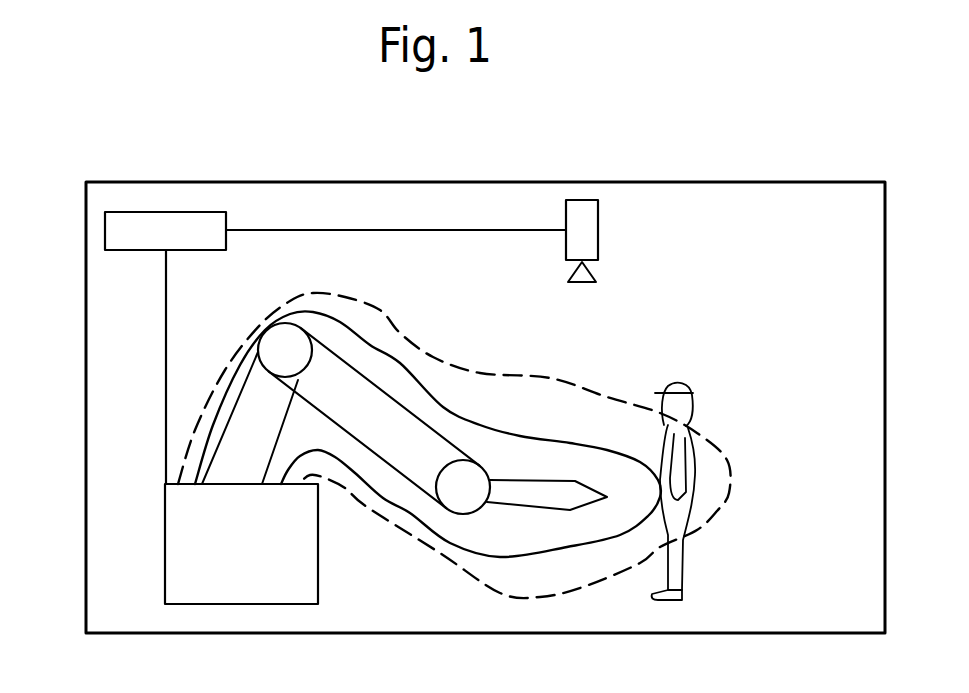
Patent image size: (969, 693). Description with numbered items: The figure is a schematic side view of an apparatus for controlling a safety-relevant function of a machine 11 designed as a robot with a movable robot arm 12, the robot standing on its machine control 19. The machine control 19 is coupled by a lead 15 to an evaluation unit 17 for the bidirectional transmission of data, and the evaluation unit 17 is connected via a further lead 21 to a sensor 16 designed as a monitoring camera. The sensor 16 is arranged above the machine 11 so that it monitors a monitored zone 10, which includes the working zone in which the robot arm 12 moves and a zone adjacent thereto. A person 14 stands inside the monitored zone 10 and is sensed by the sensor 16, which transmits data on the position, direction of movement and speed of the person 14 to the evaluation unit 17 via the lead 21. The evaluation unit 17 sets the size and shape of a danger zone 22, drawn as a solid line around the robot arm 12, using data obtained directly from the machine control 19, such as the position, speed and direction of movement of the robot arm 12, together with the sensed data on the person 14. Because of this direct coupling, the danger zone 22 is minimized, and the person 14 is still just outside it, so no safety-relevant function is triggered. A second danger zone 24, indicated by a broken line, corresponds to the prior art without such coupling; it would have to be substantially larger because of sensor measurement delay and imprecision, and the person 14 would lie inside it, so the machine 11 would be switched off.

The monitored zone 10 is at (782, 213).
The machine 11 is at (172, 543).
The robot arm 12 is at (413, 430).
The person 14 is at (687, 490).
The connection line 15 is at (166, 406).
The sensor 16 is at (582, 212).
The evaluation unit 17 is at (147, 225).
The machine control 19 is at (274, 583).
The lead 21 is at (410, 230).
The danger zone 22 is at (570, 550).
The second danger zone 24 is at (488, 595).